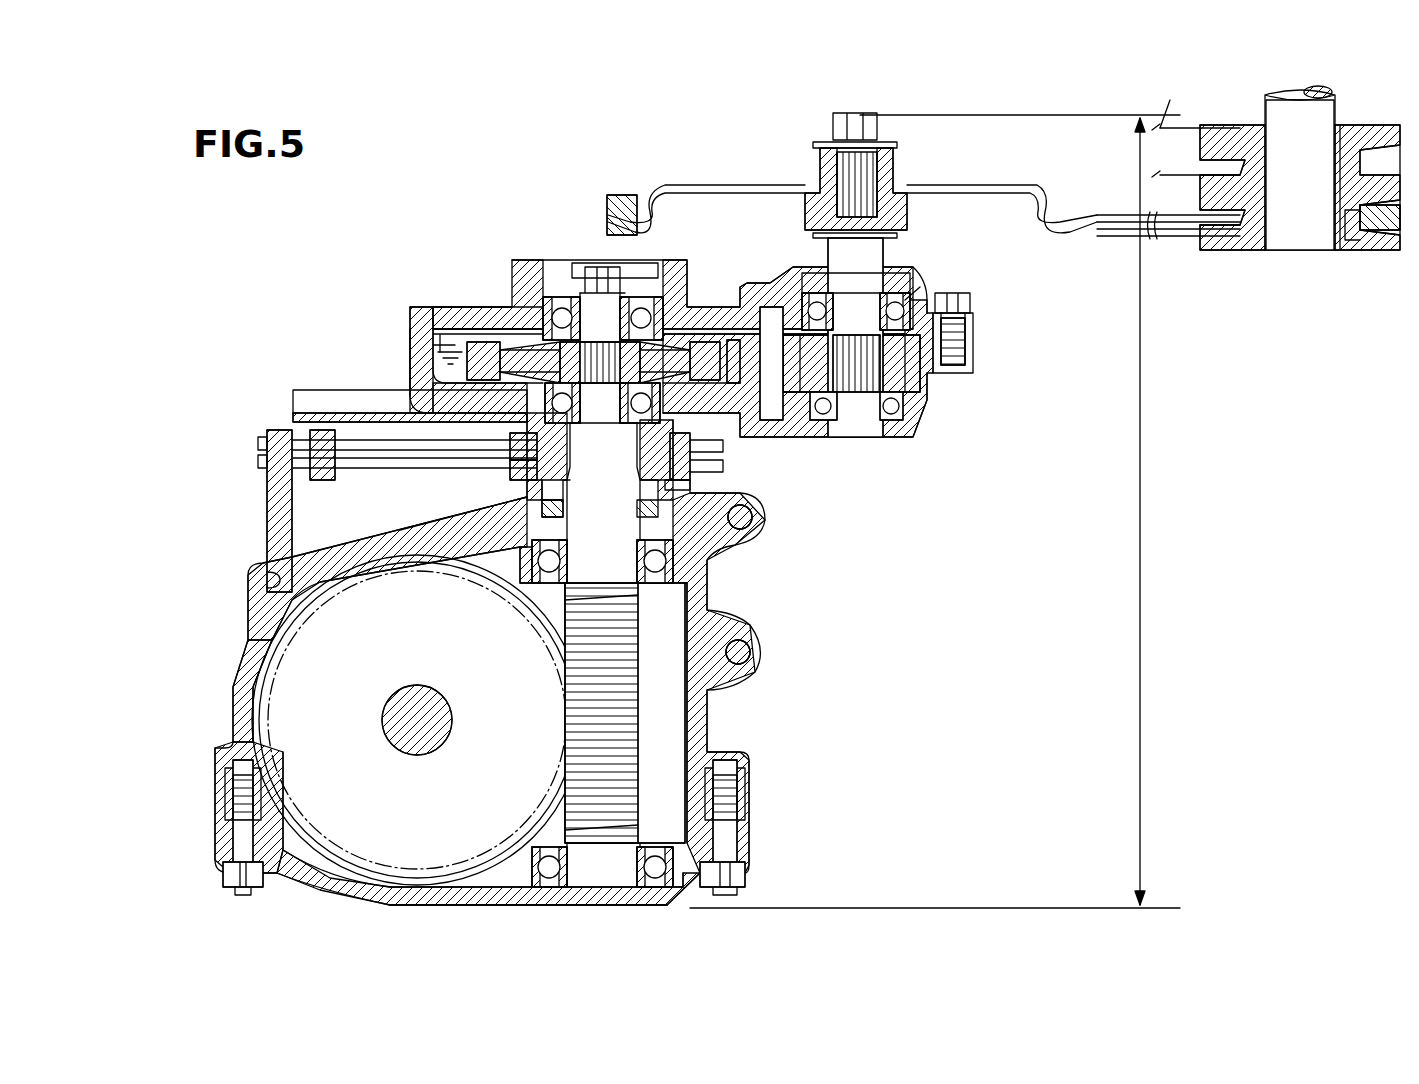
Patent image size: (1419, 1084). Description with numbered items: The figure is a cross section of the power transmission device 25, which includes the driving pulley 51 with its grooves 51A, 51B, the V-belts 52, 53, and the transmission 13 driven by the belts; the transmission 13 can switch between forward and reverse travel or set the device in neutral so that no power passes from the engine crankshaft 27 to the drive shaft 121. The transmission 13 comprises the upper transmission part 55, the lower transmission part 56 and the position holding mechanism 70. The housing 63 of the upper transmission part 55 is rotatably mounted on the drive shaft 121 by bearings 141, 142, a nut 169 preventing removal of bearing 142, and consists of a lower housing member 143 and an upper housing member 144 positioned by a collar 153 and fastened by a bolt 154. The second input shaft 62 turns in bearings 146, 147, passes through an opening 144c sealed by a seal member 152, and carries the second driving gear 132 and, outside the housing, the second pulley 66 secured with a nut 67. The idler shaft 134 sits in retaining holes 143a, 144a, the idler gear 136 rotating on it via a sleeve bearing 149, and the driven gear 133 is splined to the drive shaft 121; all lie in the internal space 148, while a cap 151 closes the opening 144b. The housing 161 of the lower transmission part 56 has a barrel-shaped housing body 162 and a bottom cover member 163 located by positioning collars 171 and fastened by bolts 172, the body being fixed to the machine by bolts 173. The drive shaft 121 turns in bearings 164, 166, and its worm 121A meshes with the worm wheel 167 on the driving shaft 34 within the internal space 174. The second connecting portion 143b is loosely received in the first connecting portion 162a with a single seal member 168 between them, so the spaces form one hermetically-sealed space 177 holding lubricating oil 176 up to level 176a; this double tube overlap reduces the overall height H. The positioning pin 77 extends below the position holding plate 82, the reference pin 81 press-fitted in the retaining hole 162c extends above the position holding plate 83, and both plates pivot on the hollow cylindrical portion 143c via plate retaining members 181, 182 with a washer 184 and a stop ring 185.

The transmission 13 is at (876, 634).
The power transmission device 25 is at (1027, 644).
The engine crankshaft 27 is at (1300, 250).
The driving shaft 34 is at (380, 722).
The driving pulley 51 is at (1261, 272).
The upper groove of drive pulley 51A is at (1215, 168).
The lower groove of drive pulley 51B is at (1200, 235).
The V-belt 52 is at (1112, 240).
The V-belt 53 is at (1170, 99).
The upper transmission part 55 is at (980, 404).
The lower transmission part 56 is at (763, 711).
The second input shaft 62 is at (870, 440).
The housing 63 is at (433, 300).
The second pulley 66 is at (970, 188).
The pulley fastening nut 67 is at (855, 120).
The position holding mechanism 70 is at (266, 393).
The positioning pin 77 is at (330, 410).
The reference pin 81 is at (265, 522).
The position holding plate 82 is at (262, 462).
The position holding plate 83 is at (262, 445).
The drive shaft 121 is at (660, 605).
The worm 121A is at (640, 745).
The second driving gear 132 is at (915, 425).
The driven gear 133 is at (462, 329).
The idler shaft 134 is at (750, 329).
The idler gear 136 is at (700, 320).
The bearing 141 is at (740, 415).
The bearing 142 is at (590, 270).
The lower housing member 143 is at (480, 360).
The retaining hole 143a is at (850, 440).
The second connecting portion 143b is at (535, 490).
The hollow cylindrical portion 143c is at (418, 375).
The upper housing member 144 is at (445, 325).
The retaining hole 144a is at (795, 300).
The opening 144b is at (655, 297).
The opening 144c is at (895, 295).
The bearing 146 is at (900, 430).
The bearing 147 is at (915, 300).
The internal space 148 is at (930, 382).
The sleeve bearing 149 is at (770, 310).
The cap 151 is at (598, 260).
The seal member 152 is at (822, 200).
The collar 153 is at (975, 343).
The bolt 154 is at (950, 303).
The housing 161 is at (758, 666).
The housing body 162 is at (695, 705).
The first connecting portion 162a is at (515, 500).
The retaining hole 162c is at (265, 578).
The bottom cover member 163 is at (690, 897).
The bearing 164 is at (680, 875).
The bearing 166 is at (675, 562).
The worm wheel 167 is at (290, 690).
The seal member 168 is at (540, 507).
The nut 169 is at (580, 265).
The positioning collar 171 is at (240, 810).
The bolt 172 is at (240, 865).
The bolt 173 is at (752, 527).
The internal space 174 is at (310, 865).
The lubricating oil 176 is at (440, 360).
The level 176a is at (438, 345).
The hermetically-sealed space 177 is at (455, 335).
The plate retaining member 181 is at (730, 465).
The plate retaining member 182 is at (700, 446).
The washer 184 is at (720, 437).
The stop ring 185 is at (690, 470).
The overall height H is at (935, 511).